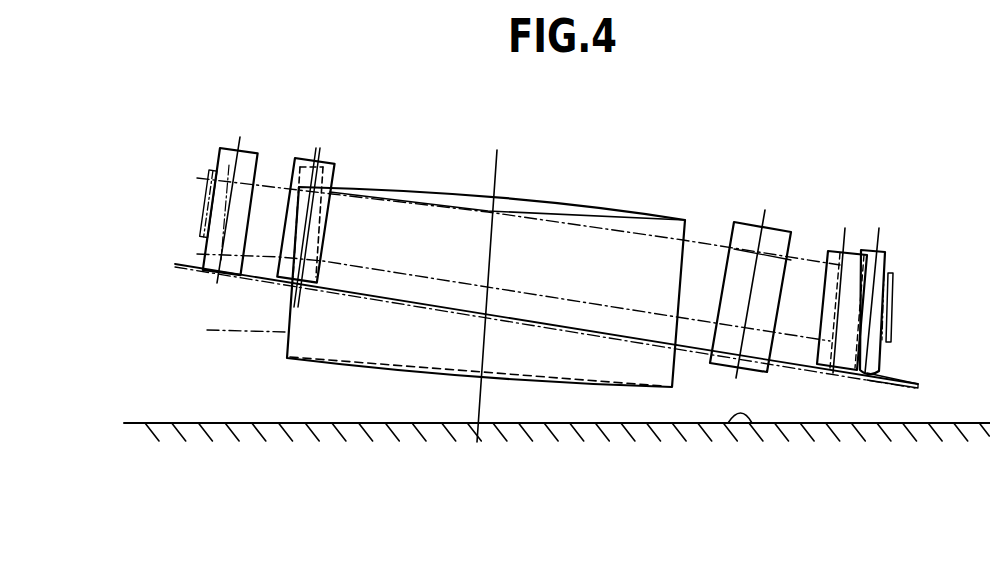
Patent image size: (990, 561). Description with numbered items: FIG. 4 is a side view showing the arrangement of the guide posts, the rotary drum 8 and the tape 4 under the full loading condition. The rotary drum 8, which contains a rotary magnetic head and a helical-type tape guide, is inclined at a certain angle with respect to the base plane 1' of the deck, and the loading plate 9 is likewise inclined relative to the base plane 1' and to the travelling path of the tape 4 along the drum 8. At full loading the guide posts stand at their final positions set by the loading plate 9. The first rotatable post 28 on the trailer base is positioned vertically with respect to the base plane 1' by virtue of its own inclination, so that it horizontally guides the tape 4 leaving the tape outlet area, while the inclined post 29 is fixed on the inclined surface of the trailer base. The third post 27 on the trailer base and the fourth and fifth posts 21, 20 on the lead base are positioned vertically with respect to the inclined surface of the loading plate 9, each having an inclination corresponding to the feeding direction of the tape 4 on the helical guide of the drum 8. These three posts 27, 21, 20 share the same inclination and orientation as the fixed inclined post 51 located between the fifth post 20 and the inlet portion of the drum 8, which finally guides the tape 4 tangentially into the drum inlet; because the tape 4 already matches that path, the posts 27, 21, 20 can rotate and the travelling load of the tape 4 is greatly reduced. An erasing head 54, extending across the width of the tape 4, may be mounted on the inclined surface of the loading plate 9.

The rotary drum 8 is at (447, 195).
The tape 4 is at (692, 243).
The loading plate 9 is at (621, 338).
The fifth rotatable post 20 is at (221, 148).
The fourth rotatable post 21 is at (294, 172).
The fixed inclined post 51 is at (303, 180).
The erasing head 54 is at (774, 226).
The first rotatable post 28 is at (828, 257).
The third rotatable post 27 is at (861, 247).
The inclined post 29 is at (888, 256).
The base plane 1' is at (557, 455).